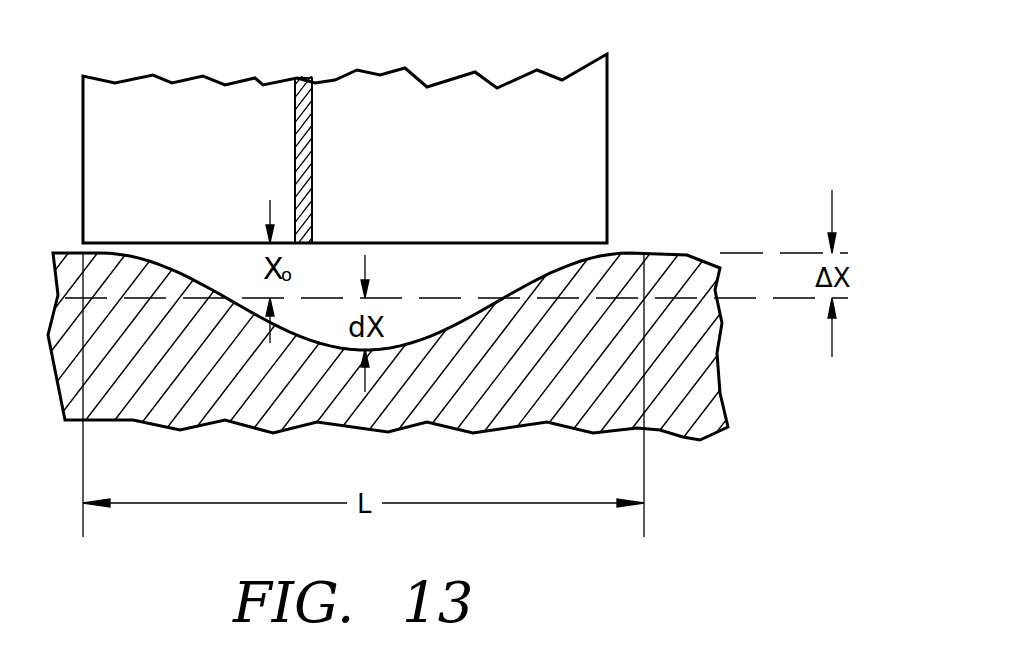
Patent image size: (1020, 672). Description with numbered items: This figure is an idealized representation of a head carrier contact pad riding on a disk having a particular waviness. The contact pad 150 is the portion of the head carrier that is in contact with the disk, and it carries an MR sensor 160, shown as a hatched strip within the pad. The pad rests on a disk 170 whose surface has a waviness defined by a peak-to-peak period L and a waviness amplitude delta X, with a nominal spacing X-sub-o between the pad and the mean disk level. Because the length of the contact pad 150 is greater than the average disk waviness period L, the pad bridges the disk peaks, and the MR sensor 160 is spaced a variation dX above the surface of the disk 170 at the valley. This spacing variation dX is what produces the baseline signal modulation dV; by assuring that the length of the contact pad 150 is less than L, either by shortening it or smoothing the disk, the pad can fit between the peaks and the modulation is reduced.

The contact pad 150 is at (572, 116).
The MR sensor 160 is at (308, 100).
The disk 170 is at (690, 395).